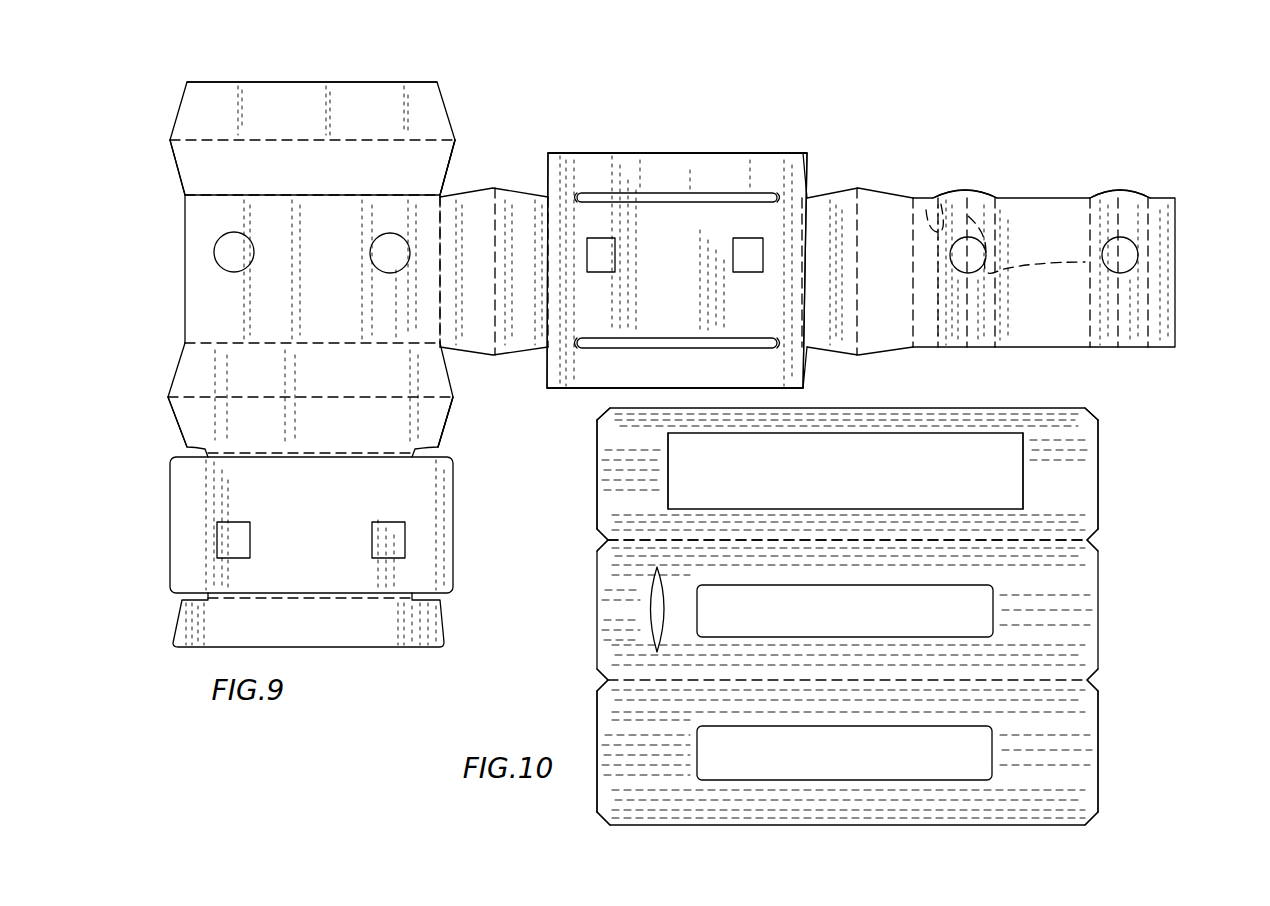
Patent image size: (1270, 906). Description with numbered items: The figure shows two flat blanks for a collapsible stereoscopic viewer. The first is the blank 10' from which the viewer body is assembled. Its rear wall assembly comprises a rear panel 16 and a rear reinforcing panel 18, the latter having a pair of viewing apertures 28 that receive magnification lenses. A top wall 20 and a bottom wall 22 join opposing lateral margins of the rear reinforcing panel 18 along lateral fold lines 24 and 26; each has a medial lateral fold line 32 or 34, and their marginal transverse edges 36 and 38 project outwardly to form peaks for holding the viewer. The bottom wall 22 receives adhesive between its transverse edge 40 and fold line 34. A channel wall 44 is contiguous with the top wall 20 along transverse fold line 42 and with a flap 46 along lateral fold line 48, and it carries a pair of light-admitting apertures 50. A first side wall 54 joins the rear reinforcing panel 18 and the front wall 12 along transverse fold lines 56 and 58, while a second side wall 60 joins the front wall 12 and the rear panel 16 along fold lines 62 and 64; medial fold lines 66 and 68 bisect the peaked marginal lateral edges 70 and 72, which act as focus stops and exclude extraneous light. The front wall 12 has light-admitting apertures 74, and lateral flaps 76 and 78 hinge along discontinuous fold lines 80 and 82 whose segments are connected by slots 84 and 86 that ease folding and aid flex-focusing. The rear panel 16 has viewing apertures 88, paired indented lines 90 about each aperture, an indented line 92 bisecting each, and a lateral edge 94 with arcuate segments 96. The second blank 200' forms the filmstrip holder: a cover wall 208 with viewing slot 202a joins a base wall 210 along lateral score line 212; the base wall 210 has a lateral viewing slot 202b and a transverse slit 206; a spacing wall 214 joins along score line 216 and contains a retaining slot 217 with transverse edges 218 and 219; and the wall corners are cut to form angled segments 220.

In FIG. 9, the blank 10' is at (677, 228).
In FIG. 9, the front wall 12 is at (660, 286).
In FIG. 9, the rear panel 16 is at (1056, 311).
In FIG. 9, the rear reinforcing panel 18 is at (318, 301).
In FIG. 9, the top wall 20 is at (320, 388).
In FIG. 9, the bottom wall 22 is at (320, 116).
In FIG. 9, the lateral fold line 24 is at (272, 343).
In FIG. 9, the lateral fold line 26 is at (312, 196).
In FIG. 9, the viewing apertures 28 is at (312, 252).
In FIG. 9, the medial lateral fold line 32 is at (286, 397).
In FIG. 9, the medial lateral fold line 34 is at (236, 140).
In FIG. 9, the marginal transverse edges 36 is at (178, 432).
In FIG. 9, the marginal transverse edges 38 is at (177, 117).
In FIG. 9, the transverse edge 40 is at (298, 82).
In FIG. 9, the transverse fold line 42 is at (332, 453).
In FIG. 9, the channel wall 44 is at (296, 528).
In FIG. 9, the flap 46 is at (326, 634).
In FIG. 9, the lateral fold line 48 is at (292, 598).
In FIG. 9, the light-admitting apertures 50 is at (311, 540).
In FIG. 9, the first side wall 54 is at (508, 281).
In FIG. 9, the transverse fold line 56 is at (442, 262).
In FIG. 9, the transverse fold line 58 is at (548, 222).
In FIG. 9, the second side wall 60 is at (874, 294).
In FIG. 9, the transverse fold line 62 is at (805, 250).
In FIG. 9, the transverse fold line 64 is at (910, 252).
In FIG. 9, the medial transverse fold line 66 is at (500, 312).
In FIG. 9, the medial transverse fold line 68 is at (860, 338).
In FIG. 9, the marginal lateral edges 70 is at (470, 190).
In FIG. 9, the marginal lateral edges 72 is at (868, 190).
In FIG. 9, the light-admitting apertures 74 is at (675, 255).
In FIG. 9, the lateral flap 76 is at (656, 386).
In FIG. 9, the lateral flap 78 is at (660, 190).
In FIG. 9, the lateral fold line 80 is at (557, 345).
In FIG. 9, the lateral fold line 82 is at (556, 212).
In FIG. 9, the slot 84 is at (685, 346).
In FIG. 9, the slot 86 is at (662, 197).
In FIG. 9, the viewing apertures 88 is at (1044, 255).
In FIG. 9, the transverse indented lines 90 is at (1150, 214).
In FIG. 9, the transverse indented line 92 is at (978, 237).
In FIG. 9, the lateral edge 94 is at (938, 198).
In FIG. 9, the arcuate segments 96 is at (990, 190).
In FIG. 10, the blank 200' is at (909, 616).
In FIG. 10, the viewing slot 202a is at (883, 766).
In FIG. 10, the lateral viewing slot 202b is at (908, 622).
In FIG. 10, the transverse slit 206 is at (646, 608).
In FIG. 10, the cover wall 208 is at (1036, 754).
In FIG. 10, the base wall 210 is at (786, 576).
In FIG. 10, the lateral score line 212 is at (810, 680).
In FIG. 10, the spacing wall 214 is at (1048, 476).
In FIG. 10, the lateral score line 216 is at (968, 540).
In FIG. 10, the retaining slot 217 is at (810, 472).
In FIG. 10, the transverse edge 218 is at (668, 466).
In FIG. 10, the transverse edge 219 is at (1023, 466).
In FIG. 10, the angled segments 220 is at (600, 412).